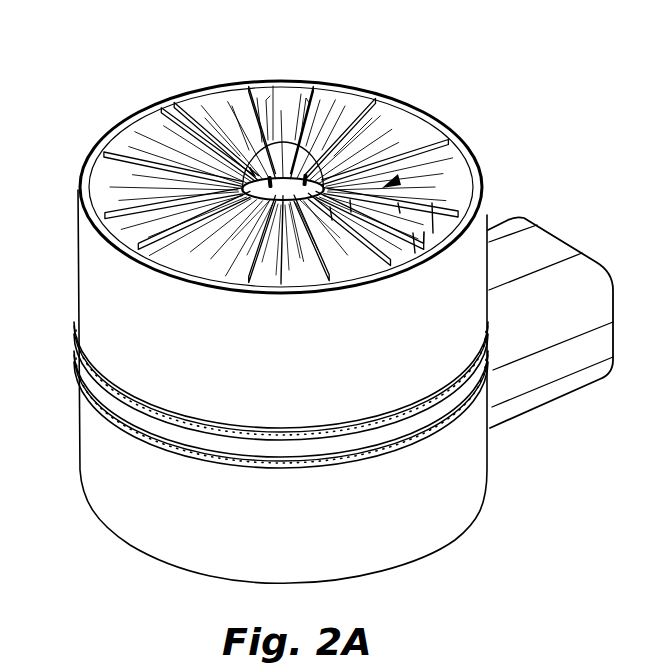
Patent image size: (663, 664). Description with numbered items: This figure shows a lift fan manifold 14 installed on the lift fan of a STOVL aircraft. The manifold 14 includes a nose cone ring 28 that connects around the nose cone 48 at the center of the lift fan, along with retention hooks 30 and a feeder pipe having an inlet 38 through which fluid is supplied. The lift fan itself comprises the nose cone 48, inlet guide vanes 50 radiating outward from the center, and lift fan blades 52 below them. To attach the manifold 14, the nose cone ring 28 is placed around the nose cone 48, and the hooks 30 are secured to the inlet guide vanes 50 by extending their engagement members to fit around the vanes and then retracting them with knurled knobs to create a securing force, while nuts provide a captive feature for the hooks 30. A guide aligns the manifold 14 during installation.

The lift fan manifold 14 is at (452, 143).
The nose cone ring 28 is at (272, 240).
The retention hooks 30 is at (223, 216).
The inlet 38 is at (425, 243).
The nose cone 48 is at (262, 142).
The inlet guide vanes 50 is at (442, 140).
The lift fan blades 52 is at (173, 281).